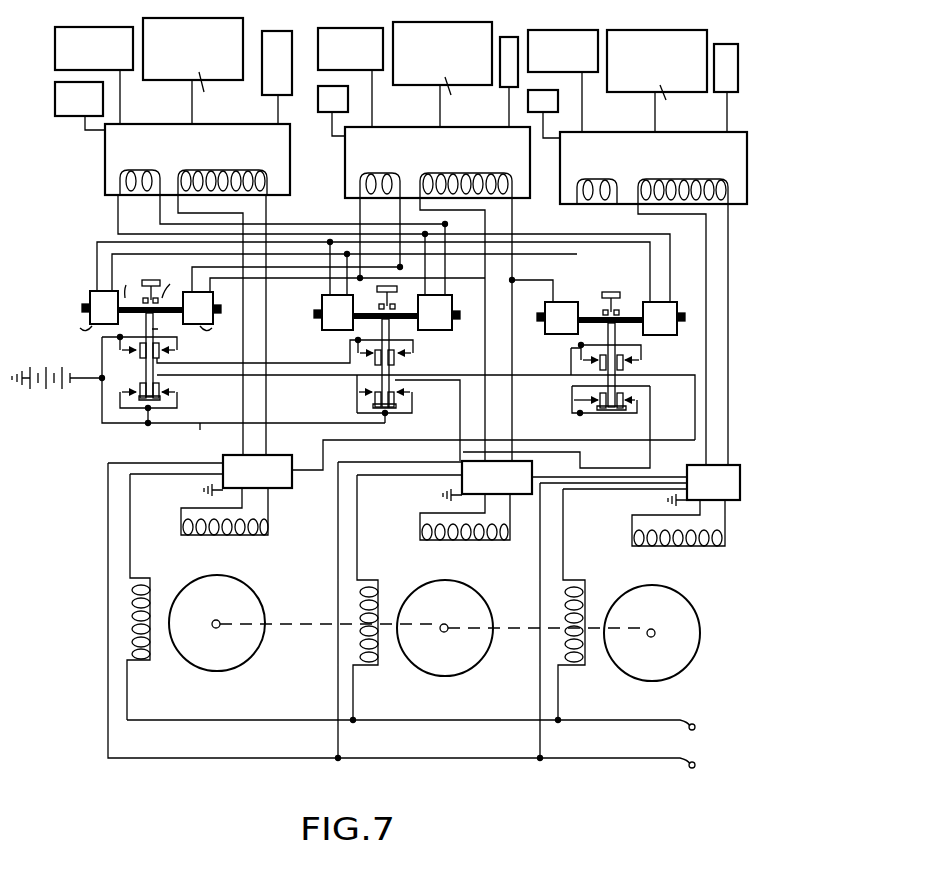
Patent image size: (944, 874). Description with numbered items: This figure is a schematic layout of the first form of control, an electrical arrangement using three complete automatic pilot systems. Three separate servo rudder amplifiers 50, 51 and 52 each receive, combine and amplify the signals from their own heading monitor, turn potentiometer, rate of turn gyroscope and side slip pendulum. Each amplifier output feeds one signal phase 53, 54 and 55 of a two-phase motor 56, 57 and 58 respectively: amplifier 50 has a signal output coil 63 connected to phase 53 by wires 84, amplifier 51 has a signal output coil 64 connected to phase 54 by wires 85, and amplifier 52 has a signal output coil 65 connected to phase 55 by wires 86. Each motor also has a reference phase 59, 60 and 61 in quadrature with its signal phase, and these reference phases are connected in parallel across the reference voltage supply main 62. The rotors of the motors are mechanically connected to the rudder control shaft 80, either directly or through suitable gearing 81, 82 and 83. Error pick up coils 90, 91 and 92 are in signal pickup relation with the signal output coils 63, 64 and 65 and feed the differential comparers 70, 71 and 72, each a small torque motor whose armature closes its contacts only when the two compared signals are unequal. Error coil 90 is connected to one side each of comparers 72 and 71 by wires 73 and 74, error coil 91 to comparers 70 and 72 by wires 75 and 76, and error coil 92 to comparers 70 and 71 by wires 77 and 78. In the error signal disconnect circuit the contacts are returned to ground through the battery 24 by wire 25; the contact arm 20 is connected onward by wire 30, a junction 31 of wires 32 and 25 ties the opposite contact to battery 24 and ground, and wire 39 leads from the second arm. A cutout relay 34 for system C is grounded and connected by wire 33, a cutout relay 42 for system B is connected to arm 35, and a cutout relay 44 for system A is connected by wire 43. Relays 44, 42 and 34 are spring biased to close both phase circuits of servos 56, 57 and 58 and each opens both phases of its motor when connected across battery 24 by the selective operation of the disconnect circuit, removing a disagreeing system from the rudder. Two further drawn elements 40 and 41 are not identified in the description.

The servo rudder amplifier A 50 is at (105, 146).
The servo rudder amplifier B 51 is at (345, 153).
The servo rudder amplifier C 52 is at (560, 158).
The signal phase 53 is at (270, 528).
The signal phase 54 is at (420, 530).
The signal phase 55 is at (632, 534).
The two phase motor 56 is at (248, 666).
The two phase motor 57 is at (474, 671).
The two phase motor 58 is at (682, 676).
The reference phase 59 is at (150, 662).
The reference phase 60 is at (376, 667).
The reference phase 61 is at (580, 670).
The reference voltage supply main 62 is at (695, 730).
The signal output coil 63 is at (280, 176).
The signal output coil 64 is at (520, 178).
The signal output coil 65 is at (736, 182).
The differential comparer 70 is at (149, 282).
The differential comparer 71 is at (398, 310).
The differential comparer 72 is at (628, 302).
The wire 73 is at (118, 212).
The wire 74 is at (446, 294).
The wire 75 is at (360, 214).
The wire 76 is at (570, 284).
The wire 77 is at (97, 258).
The wire 78 is at (330, 290).
The rudder control shaft 80 is at (317, 622).
The gearing 81 is at (218, 620).
The gearing 82 is at (447, 624).
The gearing 83 is at (653, 629).
The wires 84 is at (266, 396).
The wires 85 is at (512, 428).
The wires 86 is at (728, 360).
The error pick up coil 90 is at (120, 183).
The error pick up coil 91 is at (360, 186).
The error pick up coil 92 is at (577, 190).
The contact arm 20 is at (140, 356).
The battery 24 is at (62, 392).
The wire 25 is at (100, 422).
The wire 30 is at (312, 360).
The junction 31 is at (146, 425).
The wire 32 is at (202, 425).
The wire 33 is at (460, 396).
The cutout relay 34 is at (687, 466).
The arm 35 is at (606, 372).
The wire 39 is at (221, 378).
The lower contact set of unit c 40 is at (564, 386).
The conductor to relay B 41 is at (618, 460).
The cutout relay 42 is at (462, 461).
The wire 43 is at (442, 432).
The cutout relay 44 is at (282, 456).